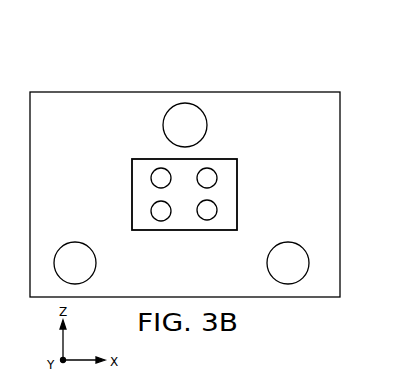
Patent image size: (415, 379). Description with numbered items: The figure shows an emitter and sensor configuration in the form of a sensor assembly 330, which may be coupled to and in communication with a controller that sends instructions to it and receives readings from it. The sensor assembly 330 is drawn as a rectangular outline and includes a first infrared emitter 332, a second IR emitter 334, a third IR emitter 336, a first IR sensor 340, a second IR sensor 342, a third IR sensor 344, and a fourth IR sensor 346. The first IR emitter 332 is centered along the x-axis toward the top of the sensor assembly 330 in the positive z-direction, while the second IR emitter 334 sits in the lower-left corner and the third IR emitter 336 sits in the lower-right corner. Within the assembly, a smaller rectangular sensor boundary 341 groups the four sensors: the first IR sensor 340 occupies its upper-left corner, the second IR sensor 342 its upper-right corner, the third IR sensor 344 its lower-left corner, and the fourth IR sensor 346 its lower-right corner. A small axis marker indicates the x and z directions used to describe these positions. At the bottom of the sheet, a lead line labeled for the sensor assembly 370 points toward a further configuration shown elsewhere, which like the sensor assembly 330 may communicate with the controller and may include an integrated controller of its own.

The sensor assembly 330 is at (128, 72).
The first infrared (IR) emitter 332 is at (207, 121).
The second IR emitter 334 is at (96, 268).
The third IR emitter 336 is at (309, 261).
The first IR sensor 340 is at (151, 178).
The sensor boundary 341 is at (144, 159).
The second IR sensor 342 is at (217, 178).
The third IR sensor 344 is at (151, 211).
The fourth IR sensor 346 is at (217, 210).
The sensor assembly 370 is at (281, 378).